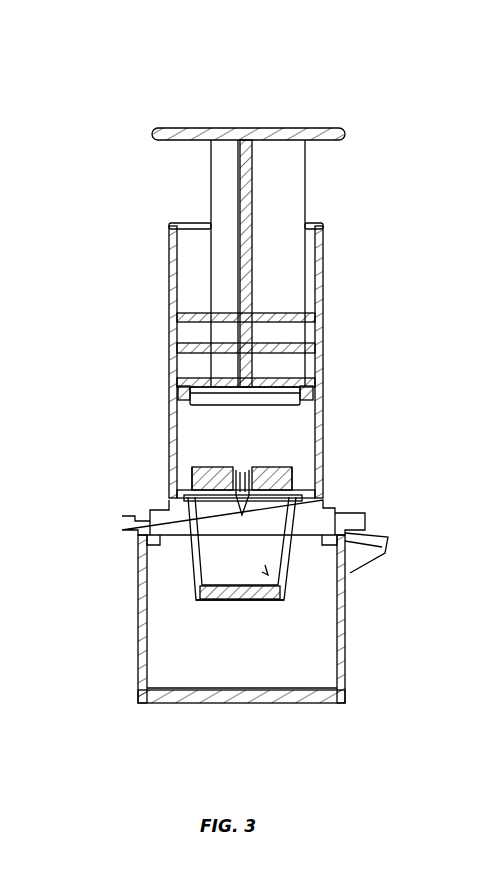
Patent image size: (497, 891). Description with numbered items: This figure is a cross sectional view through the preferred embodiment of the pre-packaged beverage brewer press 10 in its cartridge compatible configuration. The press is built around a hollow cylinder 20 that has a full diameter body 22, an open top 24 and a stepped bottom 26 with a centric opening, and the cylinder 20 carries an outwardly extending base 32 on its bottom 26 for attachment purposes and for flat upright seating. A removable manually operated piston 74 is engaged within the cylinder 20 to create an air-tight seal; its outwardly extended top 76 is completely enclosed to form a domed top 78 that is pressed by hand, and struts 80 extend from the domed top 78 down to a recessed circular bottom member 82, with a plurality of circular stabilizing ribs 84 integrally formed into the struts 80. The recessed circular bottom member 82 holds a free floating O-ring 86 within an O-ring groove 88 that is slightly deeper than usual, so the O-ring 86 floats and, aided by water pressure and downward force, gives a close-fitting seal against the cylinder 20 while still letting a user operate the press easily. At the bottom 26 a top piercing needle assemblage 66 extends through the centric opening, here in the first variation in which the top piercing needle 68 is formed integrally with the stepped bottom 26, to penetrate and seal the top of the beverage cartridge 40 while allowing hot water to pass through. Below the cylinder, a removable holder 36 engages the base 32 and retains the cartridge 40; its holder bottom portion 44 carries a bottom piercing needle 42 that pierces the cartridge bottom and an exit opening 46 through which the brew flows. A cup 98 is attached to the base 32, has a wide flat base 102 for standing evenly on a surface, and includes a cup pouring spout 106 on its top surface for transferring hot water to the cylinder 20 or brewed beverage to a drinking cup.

The pre-packaged beverage brewer press 10 is at (216, 110).
The outwardly extended top 76 is at (330, 127).
The domed top 78 is at (168, 128).
The piston 74 is at (208, 197).
The struts 80 is at (307, 195).
The open top 24 is at (178, 224).
The hollow cylinder 20 is at (170, 292).
The full diameter body 22 is at (322, 430).
The circular stabilizing ribs 84 is at (275, 315).
The recessed circular bottom member 82 is at (305, 352).
The O-ring 86 is at (312, 392).
The O-ring groove 88 is at (180, 393).
The bottom 26 is at (176, 460).
The top piercing needle assemblage 66 is at (292, 480).
The top piercing needle 68 is at (298, 500).
The beverage cartridge 40 is at (192, 497).
The outwardly extending base 32 is at (125, 526).
The removable holder 36 is at (200, 578).
The holder bottom portion 44 is at (270, 602).
The exit opening 46 is at (236, 600).
The bottom piercing needle 42 is at (290, 580).
The cup 98 is at (345, 662).
The wide flat base 102 is at (200, 705).
The cup pouring spout 106 is at (385, 552).